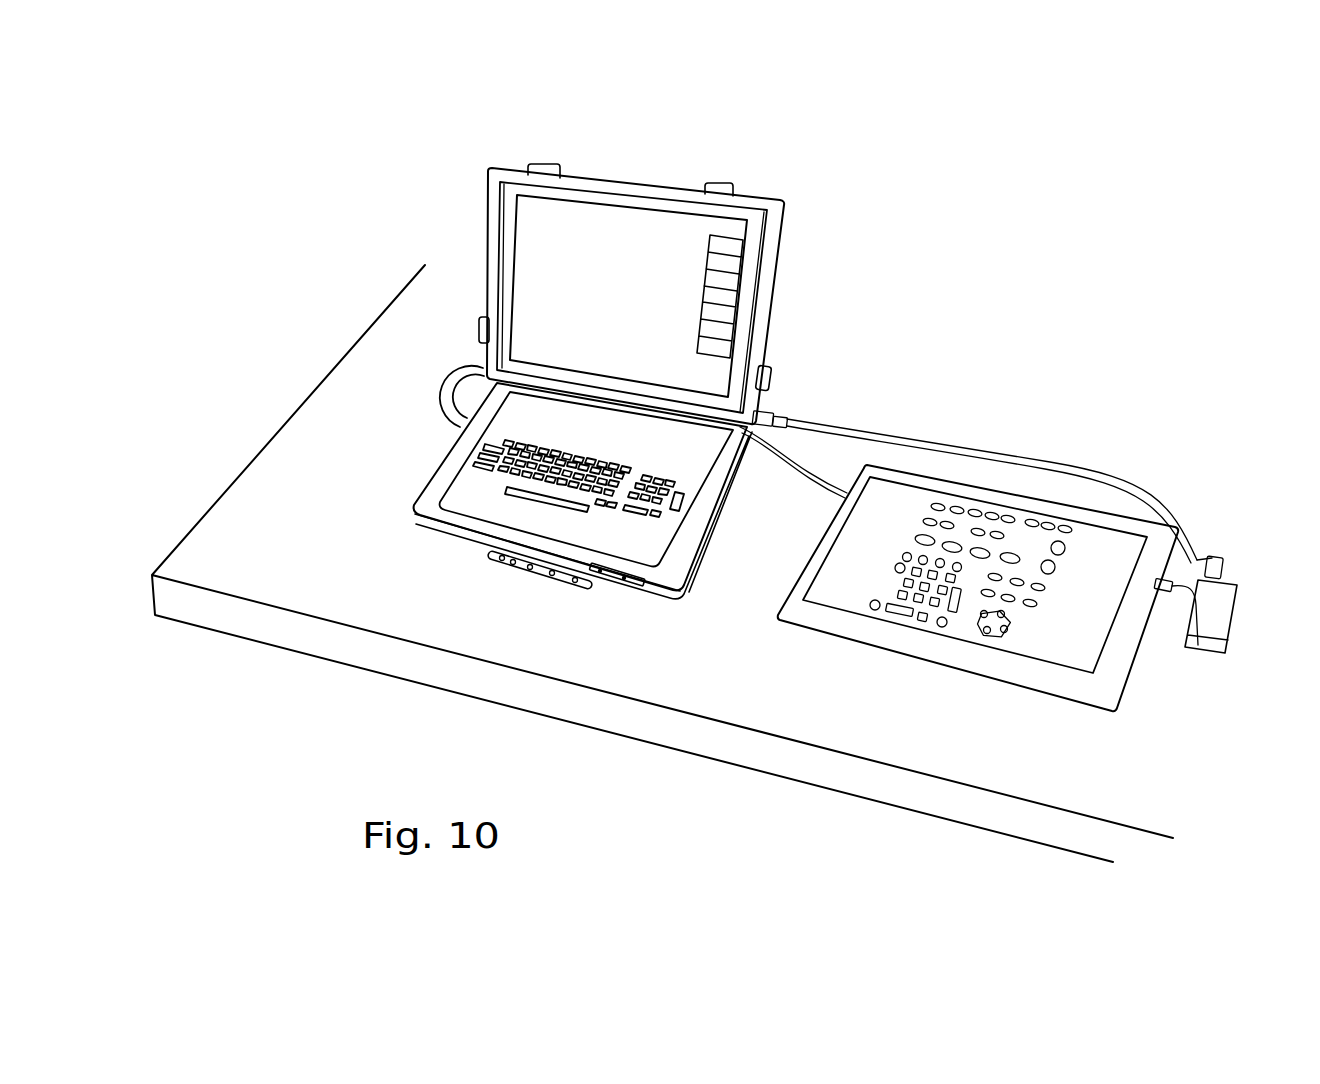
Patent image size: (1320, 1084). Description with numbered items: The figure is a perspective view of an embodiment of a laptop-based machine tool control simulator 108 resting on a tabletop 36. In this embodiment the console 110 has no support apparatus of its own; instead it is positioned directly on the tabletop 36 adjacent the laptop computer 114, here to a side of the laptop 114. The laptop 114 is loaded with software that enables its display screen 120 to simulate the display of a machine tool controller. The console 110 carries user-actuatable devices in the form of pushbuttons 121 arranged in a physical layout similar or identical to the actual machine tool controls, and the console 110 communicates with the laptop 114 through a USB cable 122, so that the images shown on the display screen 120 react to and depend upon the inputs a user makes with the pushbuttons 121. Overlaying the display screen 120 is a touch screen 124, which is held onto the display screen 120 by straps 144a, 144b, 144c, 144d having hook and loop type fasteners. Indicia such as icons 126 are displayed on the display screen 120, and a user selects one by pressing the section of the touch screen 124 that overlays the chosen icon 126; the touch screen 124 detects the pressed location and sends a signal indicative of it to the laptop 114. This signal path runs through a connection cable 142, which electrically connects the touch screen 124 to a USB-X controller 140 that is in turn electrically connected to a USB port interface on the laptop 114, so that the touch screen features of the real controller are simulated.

The tabletop 36 is at (325, 533).
The laptop-based machine tool control simulator 108 is at (422, 366).
The console 110 is at (979, 606).
The laptop computer 114 is at (478, 553).
The display screen 120 is at (623, 294).
The pushbuttons 121 is at (914, 652).
The USB cable 122 is at (445, 413).
The touch screen 124 is at (500, 213).
The icons 126 is at (730, 340).
The USB-X controller 140 is at (1213, 653).
The connection cable 142 is at (1183, 500).
The strap 144a is at (479, 330).
The strap 144b is at (552, 163).
The strap 144c is at (703, 187).
The strap 144d is at (769, 382).